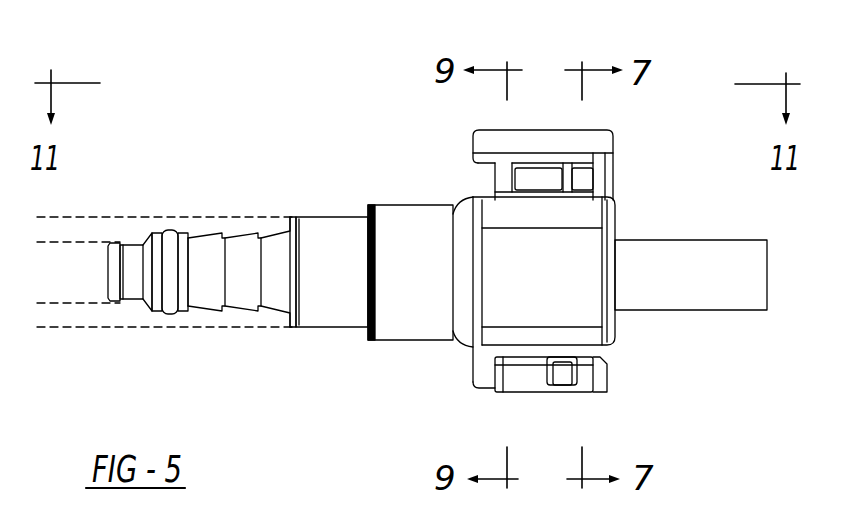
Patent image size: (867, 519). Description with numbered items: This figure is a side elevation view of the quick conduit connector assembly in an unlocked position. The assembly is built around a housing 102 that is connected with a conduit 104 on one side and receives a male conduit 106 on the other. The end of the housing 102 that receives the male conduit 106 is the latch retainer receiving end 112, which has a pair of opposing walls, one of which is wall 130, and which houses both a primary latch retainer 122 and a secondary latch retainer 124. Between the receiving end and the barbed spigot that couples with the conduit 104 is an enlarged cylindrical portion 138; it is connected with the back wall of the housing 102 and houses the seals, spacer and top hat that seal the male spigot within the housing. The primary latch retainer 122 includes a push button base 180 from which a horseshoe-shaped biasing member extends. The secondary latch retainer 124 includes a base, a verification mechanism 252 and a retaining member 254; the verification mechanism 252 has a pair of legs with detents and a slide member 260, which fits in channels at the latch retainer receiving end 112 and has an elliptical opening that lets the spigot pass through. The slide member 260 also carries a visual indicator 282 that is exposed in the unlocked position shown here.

The housing 102 is at (328, 349).
The conduit 104 is at (80, 217).
The male conduit 106 is at (737, 240).
The latch retainer receiving end 112 is at (630, 334).
The primary latch retainer 122 is at (524, 398).
The secondary latch retainer 124 is at (548, 116).
The opposing wall 130 is at (556, 296).
The enlarged cylindrical portion 138 is at (416, 318).
The push button base 180 is at (510, 380).
The verification mechanism 252 is at (476, 174).
The retaining member 254 is at (538, 173).
The slide member 260 is at (620, 164).
The visual indicator 282 is at (612, 383).